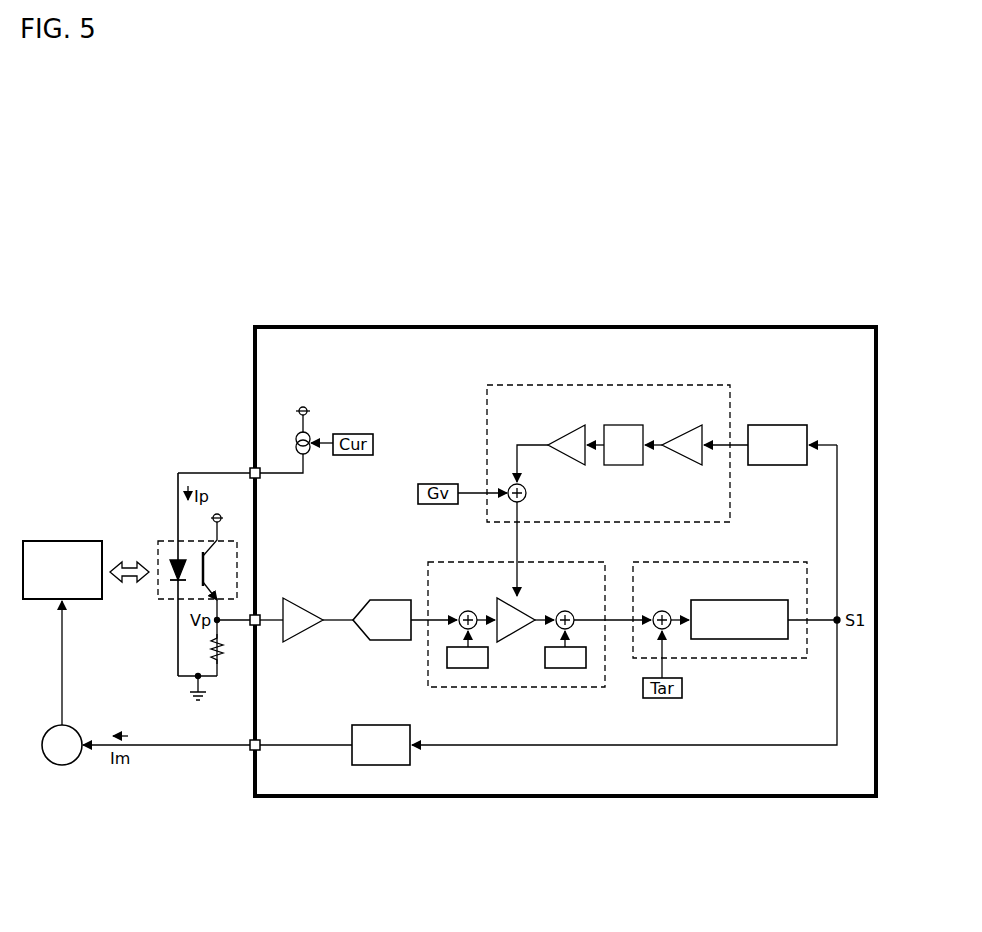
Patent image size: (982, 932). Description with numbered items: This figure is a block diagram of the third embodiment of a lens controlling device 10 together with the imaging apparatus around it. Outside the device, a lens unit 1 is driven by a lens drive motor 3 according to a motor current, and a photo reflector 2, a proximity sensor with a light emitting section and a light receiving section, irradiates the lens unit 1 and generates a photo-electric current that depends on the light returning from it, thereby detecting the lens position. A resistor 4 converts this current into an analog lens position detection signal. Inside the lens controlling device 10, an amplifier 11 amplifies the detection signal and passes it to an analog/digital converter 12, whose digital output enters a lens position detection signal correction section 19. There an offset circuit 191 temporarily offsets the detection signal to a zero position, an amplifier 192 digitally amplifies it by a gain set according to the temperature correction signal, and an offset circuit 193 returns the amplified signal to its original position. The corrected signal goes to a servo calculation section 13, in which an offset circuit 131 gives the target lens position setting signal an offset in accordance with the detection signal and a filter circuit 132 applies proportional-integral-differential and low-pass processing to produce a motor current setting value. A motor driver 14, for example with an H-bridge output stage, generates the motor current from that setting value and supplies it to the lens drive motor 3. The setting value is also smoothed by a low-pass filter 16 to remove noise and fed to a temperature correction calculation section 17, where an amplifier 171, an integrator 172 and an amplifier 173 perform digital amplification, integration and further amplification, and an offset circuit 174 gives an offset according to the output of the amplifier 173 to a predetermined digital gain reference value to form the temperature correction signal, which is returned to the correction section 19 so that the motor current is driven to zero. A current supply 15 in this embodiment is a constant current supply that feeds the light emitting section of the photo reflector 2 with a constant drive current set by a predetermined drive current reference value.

The lens unit 1 is at (63, 541).
The photo reflector 2 is at (165, 541).
The lens drive motor 3 is at (77, 730).
The resistor 4 is at (225, 652).
The lens controlling device 10 is at (568, 327).
The amplifier 11 is at (310, 601).
The analog/digital converter 12 is at (383, 600).
The servo calculation section 13 is at (717, 562).
The offset circuit 131 is at (663, 609).
The filter circuit 132 is at (740, 600).
The motor driver 14 is at (383, 725).
The current supply 15 is at (296, 443).
The low-pass filter 16 is at (780, 425).
The temperature correction calculation section 17 is at (614, 385).
The amplifier 171 is at (688, 430).
The integrator 172 is at (625, 425).
The amplifier 173 is at (573, 432).
The offset circuit 174 is at (527, 493).
The lens position detection signal correction section 19 is at (466, 562).
The offset circuit 191 is at (470, 609).
The amplifier 192 is at (512, 633).
The offset circuit 193 is at (567, 609).